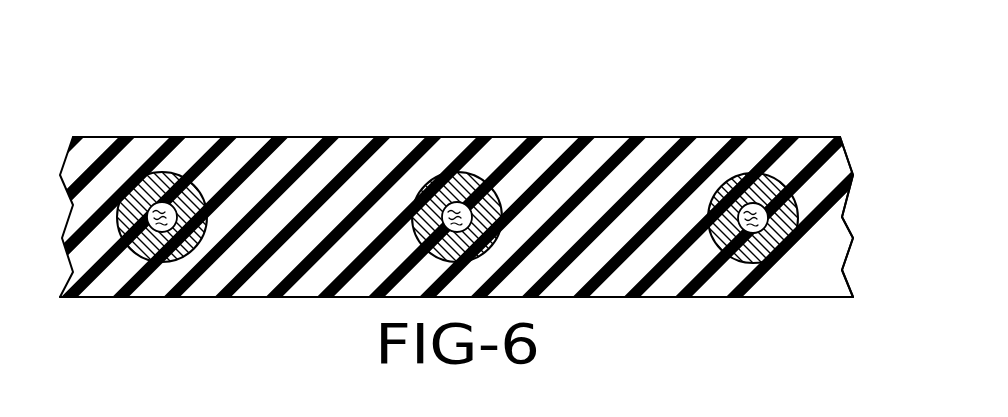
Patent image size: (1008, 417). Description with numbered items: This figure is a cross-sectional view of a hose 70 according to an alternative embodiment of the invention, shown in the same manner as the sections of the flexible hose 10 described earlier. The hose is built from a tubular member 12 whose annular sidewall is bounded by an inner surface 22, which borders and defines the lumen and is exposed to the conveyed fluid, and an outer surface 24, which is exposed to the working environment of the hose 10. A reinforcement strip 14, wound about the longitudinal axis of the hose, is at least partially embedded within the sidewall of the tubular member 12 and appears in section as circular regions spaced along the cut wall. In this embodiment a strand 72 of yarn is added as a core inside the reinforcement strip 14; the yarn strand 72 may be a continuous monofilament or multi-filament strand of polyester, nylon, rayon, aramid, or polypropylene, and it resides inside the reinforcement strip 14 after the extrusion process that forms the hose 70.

The hose 70 is at (90, 105).
The tubular member 12 is at (256, 152).
The reinforcement strip 14 is at (453, 203).
The yarn strand 72 is at (465, 198).
The outer surface 24 is at (670, 135).
The inner surface 22 is at (665, 300).
The flexible hose 10 is at (855, 160).